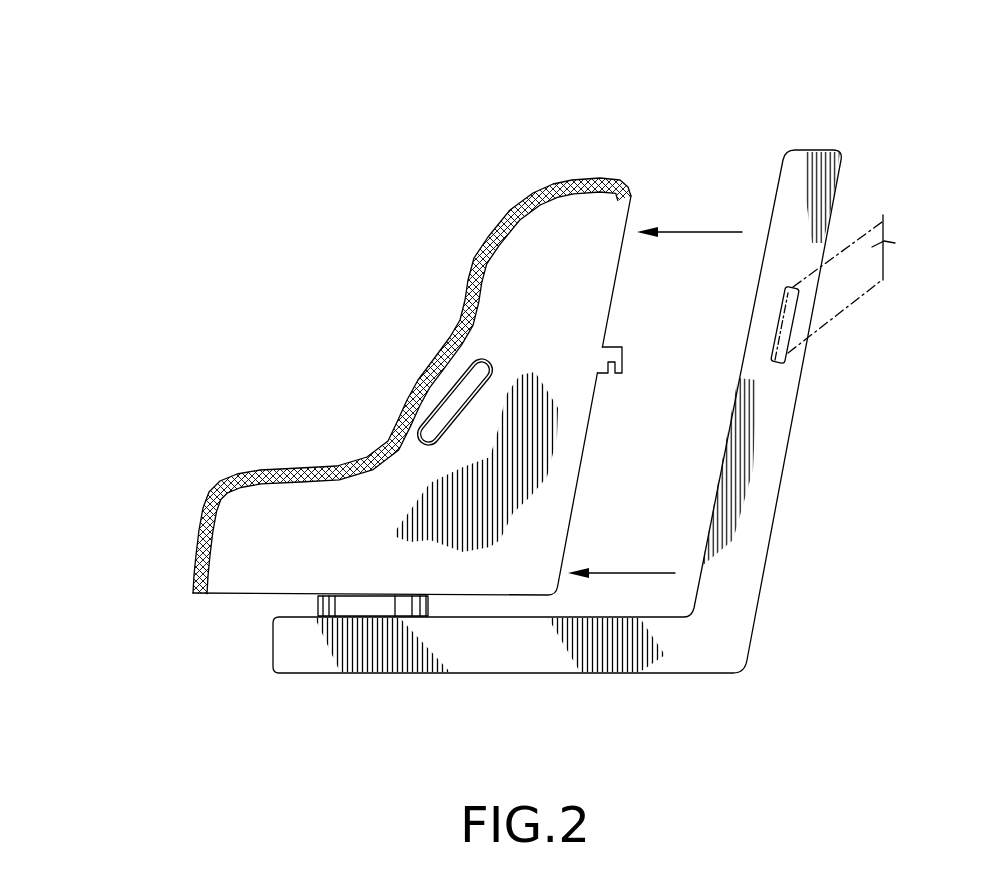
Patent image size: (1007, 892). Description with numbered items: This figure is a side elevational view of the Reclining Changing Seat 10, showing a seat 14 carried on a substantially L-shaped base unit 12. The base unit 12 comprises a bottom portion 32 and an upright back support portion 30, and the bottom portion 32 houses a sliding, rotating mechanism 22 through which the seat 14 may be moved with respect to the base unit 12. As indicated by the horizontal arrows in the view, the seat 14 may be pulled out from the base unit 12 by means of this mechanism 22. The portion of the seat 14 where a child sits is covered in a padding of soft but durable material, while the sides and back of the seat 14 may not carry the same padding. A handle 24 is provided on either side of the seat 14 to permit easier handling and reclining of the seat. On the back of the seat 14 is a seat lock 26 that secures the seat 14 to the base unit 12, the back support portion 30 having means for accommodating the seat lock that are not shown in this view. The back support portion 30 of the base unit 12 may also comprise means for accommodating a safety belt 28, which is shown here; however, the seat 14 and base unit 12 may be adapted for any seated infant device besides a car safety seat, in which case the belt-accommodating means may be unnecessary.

The child seat assembly 10 is at (593, 52).
The base unit 12 is at (725, 653).
The seat 14 is at (497, 240).
The mechanism 22 is at (300, 607).
The handle 24 is at (443, 405).
The seat lock 26 is at (601, 373).
The safety belt 28 is at (772, 363).
The back support portion 30 is at (737, 373).
The bottom portion 32 is at (487, 648).